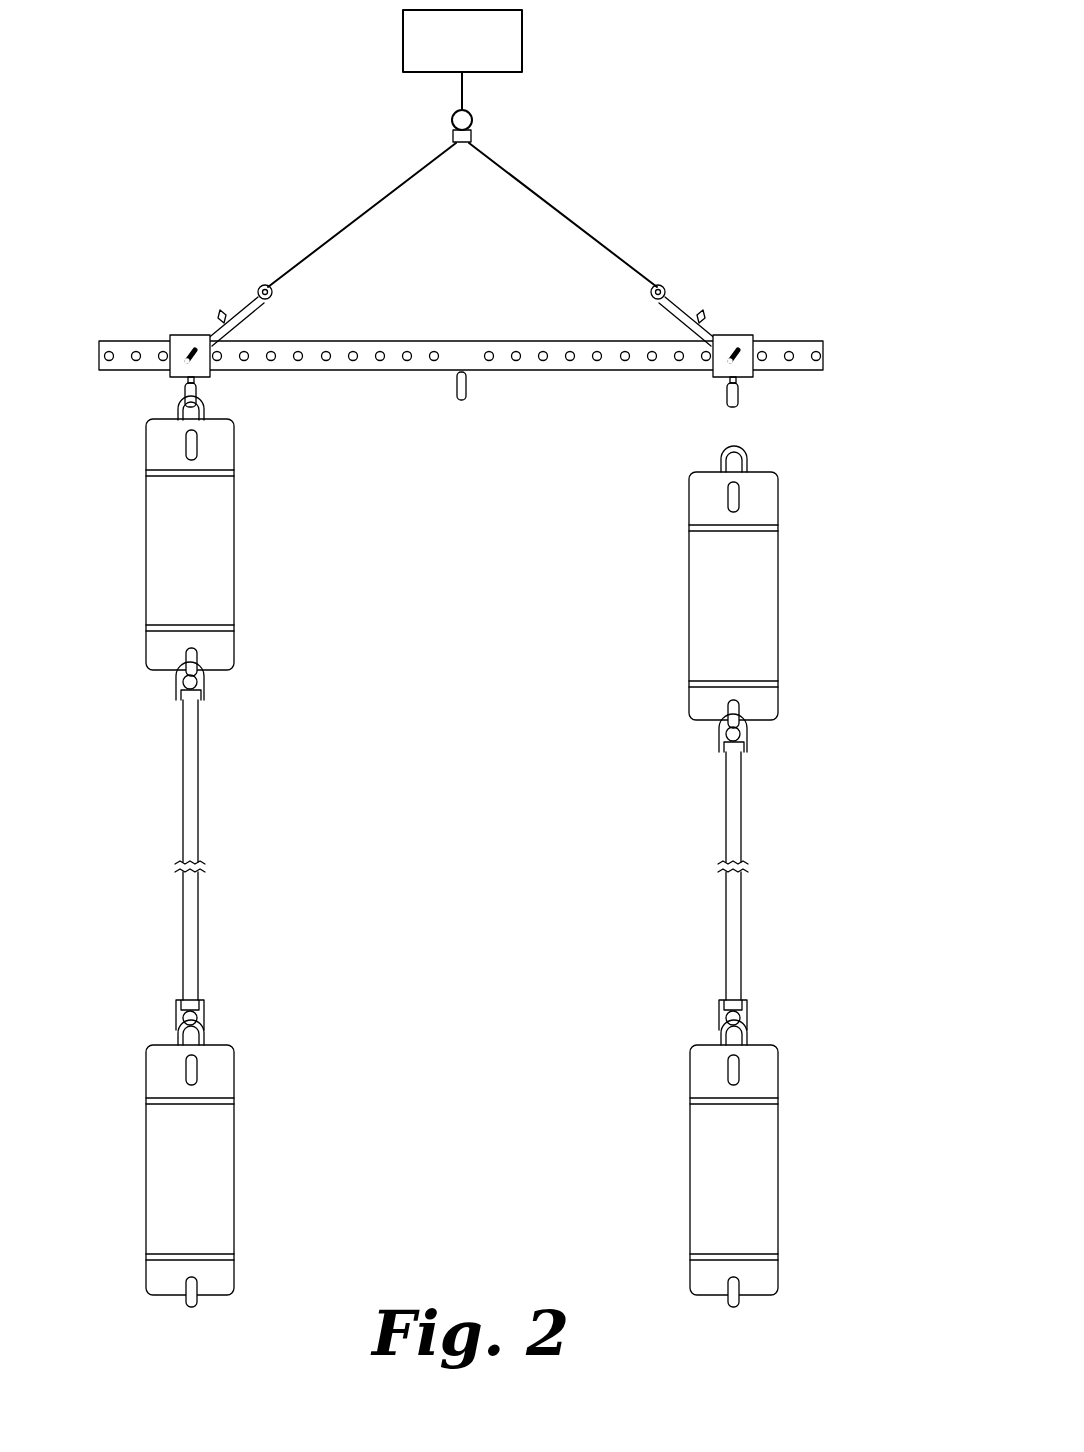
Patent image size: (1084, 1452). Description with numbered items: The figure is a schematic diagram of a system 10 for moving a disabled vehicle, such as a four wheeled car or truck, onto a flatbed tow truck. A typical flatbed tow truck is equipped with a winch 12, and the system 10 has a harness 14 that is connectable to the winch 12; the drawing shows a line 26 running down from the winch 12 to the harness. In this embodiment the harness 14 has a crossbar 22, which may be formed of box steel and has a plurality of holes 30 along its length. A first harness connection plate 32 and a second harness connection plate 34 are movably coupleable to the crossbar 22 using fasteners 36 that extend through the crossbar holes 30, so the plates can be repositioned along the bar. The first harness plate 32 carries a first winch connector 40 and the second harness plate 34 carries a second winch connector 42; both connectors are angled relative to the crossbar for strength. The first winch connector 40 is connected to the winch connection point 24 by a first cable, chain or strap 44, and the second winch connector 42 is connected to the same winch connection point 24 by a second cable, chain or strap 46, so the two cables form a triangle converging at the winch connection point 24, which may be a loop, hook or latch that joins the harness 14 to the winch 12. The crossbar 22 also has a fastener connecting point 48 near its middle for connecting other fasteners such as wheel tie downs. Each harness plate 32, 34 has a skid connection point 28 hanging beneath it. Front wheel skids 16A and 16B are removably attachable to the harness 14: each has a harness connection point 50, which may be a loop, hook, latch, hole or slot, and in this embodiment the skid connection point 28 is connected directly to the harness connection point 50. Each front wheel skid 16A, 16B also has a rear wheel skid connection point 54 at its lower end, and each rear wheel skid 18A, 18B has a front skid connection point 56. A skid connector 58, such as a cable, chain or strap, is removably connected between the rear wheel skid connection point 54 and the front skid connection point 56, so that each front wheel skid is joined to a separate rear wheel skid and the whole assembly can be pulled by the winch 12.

The system for moving a disabled vehicle 10 is at (862, 817).
The winch 12 is at (522, 40).
The harness 14 is at (648, 212).
The front wheel skid 16A is at (205, 540).
The front wheel skid 16B is at (752, 595).
The rear wheel skid 18A is at (205, 1165).
The rear wheel skid 18B is at (752, 1165).
The crossbar 22 is at (823, 352).
The winch connection point 24 is at (472, 122).
The winch cable 26 is at (455, 97).
The skid connection point 28 is at (200, 396).
The holes 30 is at (575, 370).
The first harness connection plate 32 is at (176, 334).
The second harness connection plate 34 is at (752, 334).
The fasteners 36 is at (188, 343).
The first winch connector 40 is at (213, 325).
The second winch connector 42 is at (708, 325).
The first cable, chain or strap 44 is at (330, 228).
The second cable, chain or strap 46 is at (573, 215).
The fastener connecting point 48 is at (456, 395).
The harness connection point 50 is at (176, 410).
The rear wheel skid connection point 54 is at (198, 665).
The front skid connection point 56 is at (206, 1028).
The skid connector 58 is at (198, 790).